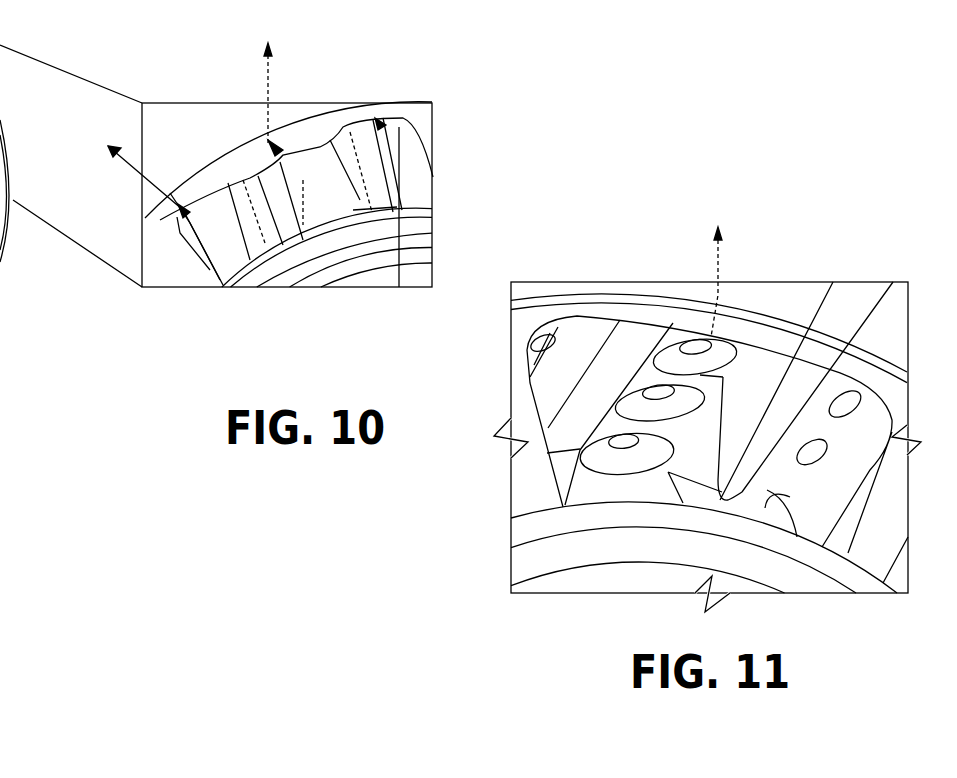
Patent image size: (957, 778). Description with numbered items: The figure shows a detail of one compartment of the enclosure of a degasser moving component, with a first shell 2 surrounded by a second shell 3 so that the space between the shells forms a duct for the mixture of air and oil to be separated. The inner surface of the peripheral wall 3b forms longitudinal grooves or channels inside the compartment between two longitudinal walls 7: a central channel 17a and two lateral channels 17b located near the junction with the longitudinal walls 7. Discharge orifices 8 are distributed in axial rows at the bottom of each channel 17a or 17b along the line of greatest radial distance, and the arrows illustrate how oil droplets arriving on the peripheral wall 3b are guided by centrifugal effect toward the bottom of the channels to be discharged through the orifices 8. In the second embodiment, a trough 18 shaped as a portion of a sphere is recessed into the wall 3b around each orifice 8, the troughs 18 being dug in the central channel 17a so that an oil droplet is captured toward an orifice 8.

In FIG. 10, the first shell 2 is at (297, 272).
In FIG. 11, the first shell 2 is at (643, 527).
In FIG. 10, the second shell 3 is at (410, 210).
In FIG. 10, the peripheral wall 3b is at (320, 130).
In FIG. 11, the peripheral wall 3b is at (627, 300).
In FIG. 10, the longitudinal wall 7 is at (173, 264).
In FIG. 11, the longitudinal wall 7 is at (523, 407).
In FIG. 10, the discharge orifice 8 is at (184, 207).
In FIG. 11, the discharge orifice 8 is at (688, 345).
In FIG. 10, the central channel 17a is at (285, 163).
In FIG. 11, the central channel 17a is at (733, 333).
In FIG. 10, the lateral channel 17b is at (210, 345).
In FIG. 11, the trough 18 is at (808, 325).